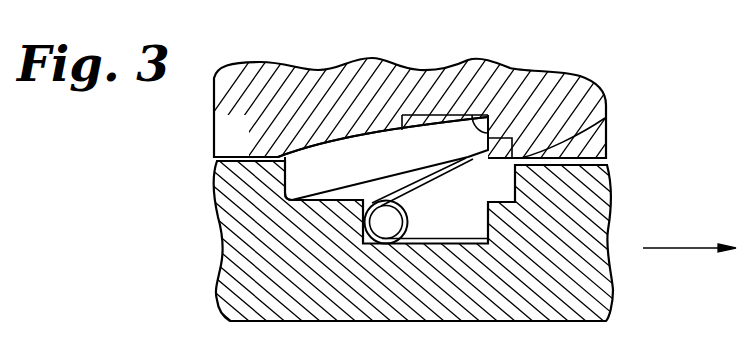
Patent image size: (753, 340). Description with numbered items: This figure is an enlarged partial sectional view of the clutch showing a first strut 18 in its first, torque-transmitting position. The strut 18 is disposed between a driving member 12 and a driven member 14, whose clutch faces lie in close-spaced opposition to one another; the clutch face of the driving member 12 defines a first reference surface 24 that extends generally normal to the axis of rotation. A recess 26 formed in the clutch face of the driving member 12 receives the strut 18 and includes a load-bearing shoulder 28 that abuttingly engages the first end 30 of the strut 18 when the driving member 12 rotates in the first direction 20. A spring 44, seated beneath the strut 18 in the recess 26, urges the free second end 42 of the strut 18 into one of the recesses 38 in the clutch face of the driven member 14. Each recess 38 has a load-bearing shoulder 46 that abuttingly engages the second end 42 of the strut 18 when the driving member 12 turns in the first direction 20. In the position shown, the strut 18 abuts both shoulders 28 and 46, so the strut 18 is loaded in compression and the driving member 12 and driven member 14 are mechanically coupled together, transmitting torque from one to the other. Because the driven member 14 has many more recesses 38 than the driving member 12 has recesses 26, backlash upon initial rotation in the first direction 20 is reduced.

The driving member 12 is at (612, 264).
The driven member 14 is at (567, 70).
The first strut 18 is at (434, 128).
The first direction 20 is at (682, 247).
The first reference surface 24 is at (218, 160).
The recess 26 is at (500, 198).
The load-bearing shoulder 28 is at (366, 211).
The first end 30 is at (285, 183).
The recess 38 is at (387, 133).
The second end 42 is at (483, 151).
The spring 44 is at (364, 224).
The load-bearing shoulder 46 is at (471, 115).